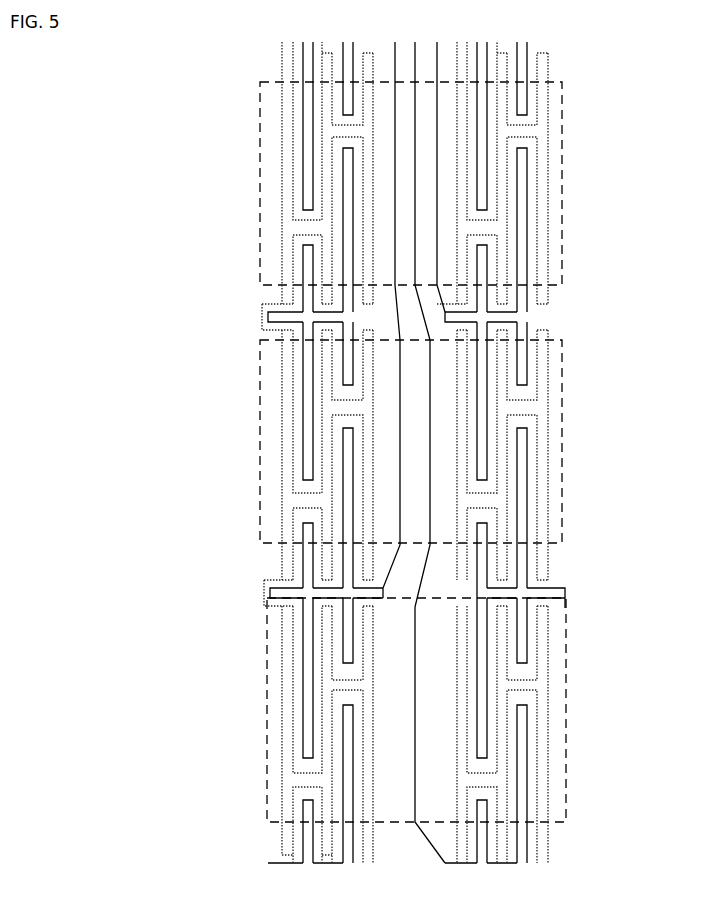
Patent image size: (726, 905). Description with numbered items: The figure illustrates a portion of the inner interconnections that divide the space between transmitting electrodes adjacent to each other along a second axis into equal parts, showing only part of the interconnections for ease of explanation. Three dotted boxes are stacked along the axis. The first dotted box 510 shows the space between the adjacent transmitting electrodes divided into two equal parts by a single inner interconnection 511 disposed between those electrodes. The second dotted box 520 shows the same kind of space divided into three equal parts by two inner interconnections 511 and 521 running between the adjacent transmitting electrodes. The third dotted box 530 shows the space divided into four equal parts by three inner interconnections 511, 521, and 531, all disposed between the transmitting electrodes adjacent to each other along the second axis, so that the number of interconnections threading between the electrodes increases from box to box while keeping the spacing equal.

The third dotted box 530 is at (563, 96).
The inner interconnection 531 is at (437, 197).
The second dotted box 520 is at (563, 354).
The inner interconnection 521 is at (400, 458).
The first dotted box 510 is at (568, 614).
The inner interconnection 511 is at (413, 720).